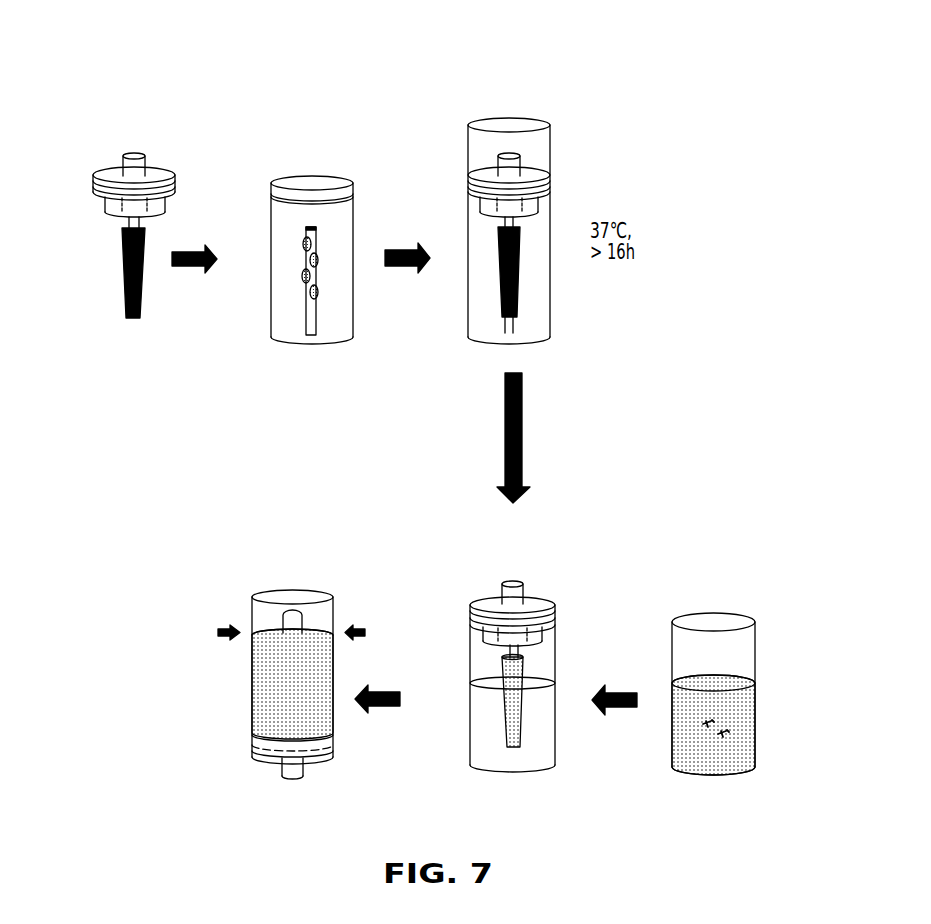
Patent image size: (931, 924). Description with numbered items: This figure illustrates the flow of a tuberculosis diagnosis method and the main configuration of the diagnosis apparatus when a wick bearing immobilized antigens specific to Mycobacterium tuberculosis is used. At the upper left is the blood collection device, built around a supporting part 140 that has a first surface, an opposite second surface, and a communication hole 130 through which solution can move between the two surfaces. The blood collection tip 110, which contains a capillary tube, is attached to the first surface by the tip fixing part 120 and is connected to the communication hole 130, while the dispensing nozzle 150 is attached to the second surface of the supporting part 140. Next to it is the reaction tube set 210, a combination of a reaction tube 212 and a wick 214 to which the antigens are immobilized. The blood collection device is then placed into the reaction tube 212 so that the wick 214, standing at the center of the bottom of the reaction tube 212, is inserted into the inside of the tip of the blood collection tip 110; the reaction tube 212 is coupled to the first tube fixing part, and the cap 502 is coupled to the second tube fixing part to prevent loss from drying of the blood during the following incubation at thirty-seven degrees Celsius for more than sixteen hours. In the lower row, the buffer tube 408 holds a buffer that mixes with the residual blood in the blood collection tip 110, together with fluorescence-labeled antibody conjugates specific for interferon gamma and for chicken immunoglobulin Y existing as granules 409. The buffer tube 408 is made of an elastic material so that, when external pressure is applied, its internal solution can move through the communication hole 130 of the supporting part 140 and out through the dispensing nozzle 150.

The blood collection tip 110 is at (145, 284).
The tip fixing part 120 is at (128, 223).
The communication hole 130 is at (150, 211).
The supporting part 140 is at (178, 174).
The dispensing nozzle 150 is at (135, 156).
The reaction tube set 210 is at (444, 193).
The reaction tube 212 is at (353, 322).
The wick 214 is at (318, 303).
The cap 502 is at (550, 118).
The buffer tube 408 is at (555, 682).
The granules 409 is at (728, 733).